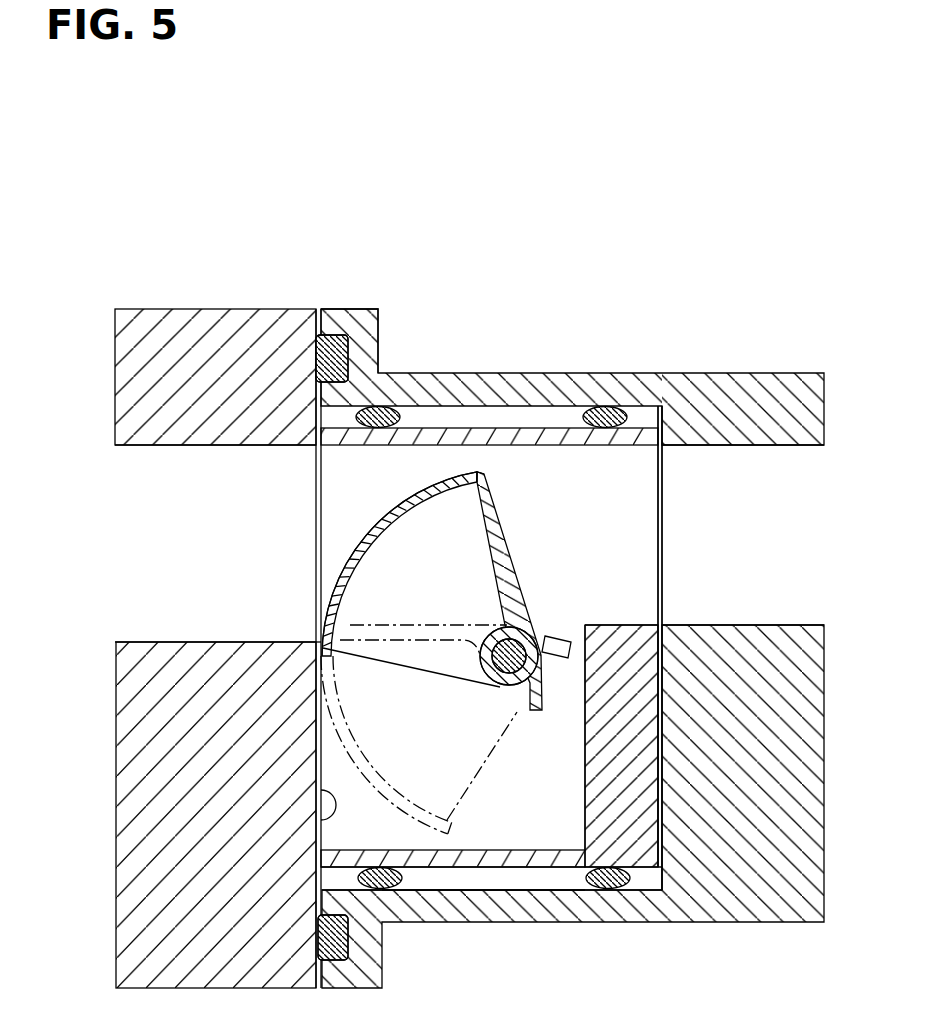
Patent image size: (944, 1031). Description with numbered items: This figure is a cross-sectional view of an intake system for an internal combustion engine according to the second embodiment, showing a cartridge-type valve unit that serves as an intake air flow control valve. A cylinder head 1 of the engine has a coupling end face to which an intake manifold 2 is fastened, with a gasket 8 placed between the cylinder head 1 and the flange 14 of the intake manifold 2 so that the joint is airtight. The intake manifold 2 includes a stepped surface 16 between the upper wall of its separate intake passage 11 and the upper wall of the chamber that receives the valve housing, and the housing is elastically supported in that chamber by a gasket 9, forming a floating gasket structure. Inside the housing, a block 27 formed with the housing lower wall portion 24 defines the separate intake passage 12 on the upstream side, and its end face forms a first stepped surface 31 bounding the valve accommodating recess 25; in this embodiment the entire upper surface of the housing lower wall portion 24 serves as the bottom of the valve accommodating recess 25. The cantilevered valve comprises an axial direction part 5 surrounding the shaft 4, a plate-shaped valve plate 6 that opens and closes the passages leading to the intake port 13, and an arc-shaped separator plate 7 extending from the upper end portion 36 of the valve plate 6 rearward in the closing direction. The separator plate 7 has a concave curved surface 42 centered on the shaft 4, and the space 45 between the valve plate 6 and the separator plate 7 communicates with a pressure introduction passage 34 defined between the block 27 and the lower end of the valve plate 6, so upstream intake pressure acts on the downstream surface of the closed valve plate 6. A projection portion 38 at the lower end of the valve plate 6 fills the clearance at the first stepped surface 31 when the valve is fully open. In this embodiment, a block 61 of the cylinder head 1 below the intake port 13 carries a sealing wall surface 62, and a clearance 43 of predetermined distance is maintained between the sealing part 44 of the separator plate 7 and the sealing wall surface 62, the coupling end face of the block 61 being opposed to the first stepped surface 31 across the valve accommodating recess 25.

The cylinder head 1 is at (160, 318).
The intake manifold 2 is at (742, 385).
The shaft 4 is at (497, 682).
The axial direction part 5 is at (480, 667).
The valve plate 6 is at (507, 543).
The separator plate 7 is at (400, 500).
The gasket 8 is at (330, 345).
The gasket 9 is at (600, 408).
The separate intake passage 11 is at (729, 553).
The separate intake passage 12 is at (576, 550).
The intake port 13 is at (209, 556).
The flange 14 is at (372, 318).
The stepped surface 16 is at (653, 418).
The housing lower wall portion 24 is at (441, 862).
The valve accommodating recess 25 is at (510, 803).
The block 27 is at (633, 777).
The first stepped surface 31 is at (583, 762).
The pressure introduction passage 34 is at (567, 672).
The upper end portion 36 is at (480, 472).
The projection portion 38 is at (535, 708).
The concave curved surface 42 is at (363, 547).
The clearance 43 is at (317, 642).
The sealing part 44 is at (322, 652).
The space 45 is at (425, 590).
The block 61 is at (177, 775).
The sealing wall surface 62 is at (320, 835).